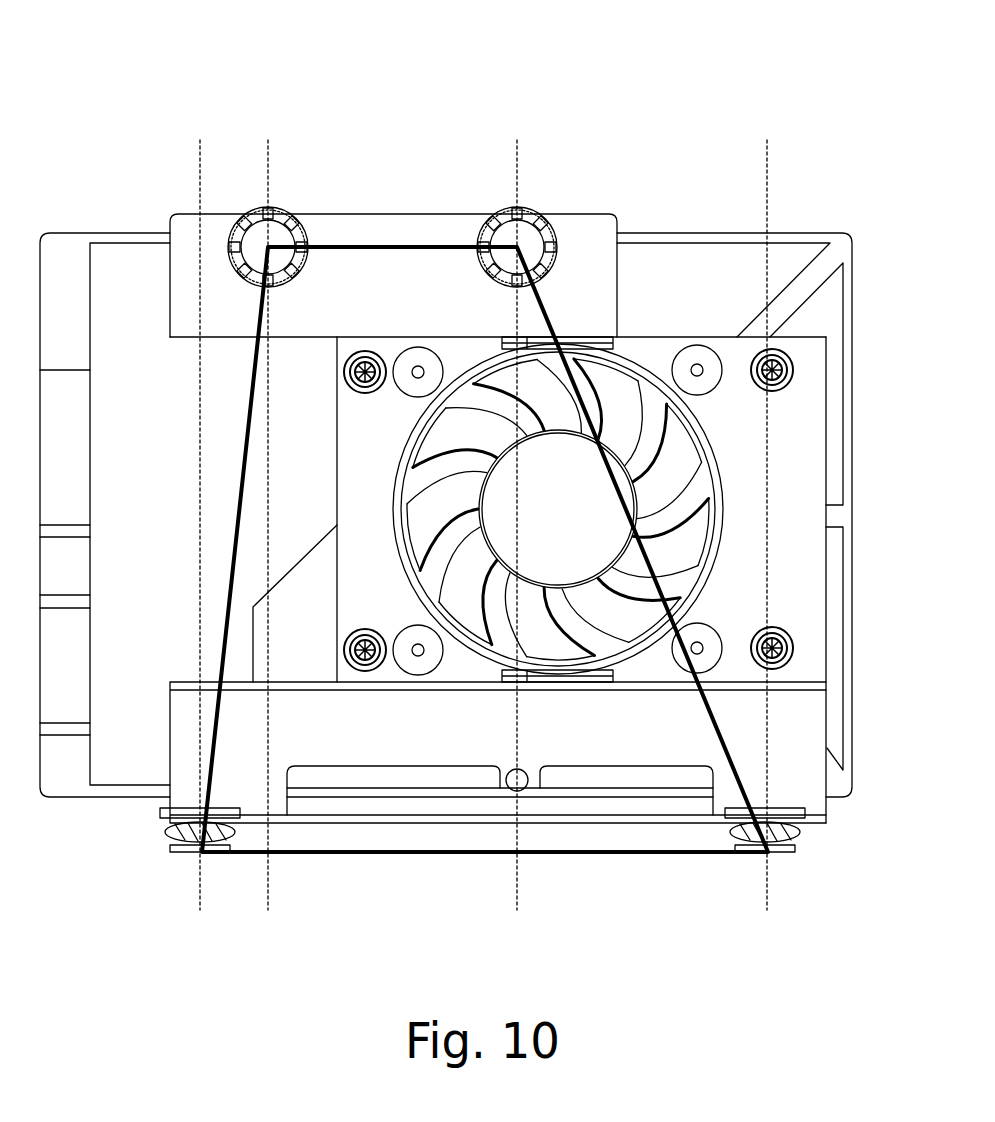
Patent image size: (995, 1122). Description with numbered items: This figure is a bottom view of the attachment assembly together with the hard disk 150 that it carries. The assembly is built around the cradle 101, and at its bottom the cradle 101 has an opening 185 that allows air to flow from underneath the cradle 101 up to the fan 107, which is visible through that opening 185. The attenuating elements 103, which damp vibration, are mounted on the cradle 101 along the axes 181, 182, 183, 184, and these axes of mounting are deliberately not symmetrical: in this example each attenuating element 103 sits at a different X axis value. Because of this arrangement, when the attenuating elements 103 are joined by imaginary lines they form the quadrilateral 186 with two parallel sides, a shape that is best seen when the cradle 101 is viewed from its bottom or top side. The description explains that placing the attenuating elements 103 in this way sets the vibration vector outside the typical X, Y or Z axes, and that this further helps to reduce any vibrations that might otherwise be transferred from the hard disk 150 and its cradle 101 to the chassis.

The cradle 101 is at (737, 663).
The attenuating elements 103 is at (505, 215).
The fan 107 is at (533, 632).
The hard disk 150 is at (285, 660).
The axis of mounting 181 is at (200, 178).
The axis of mounting 182 is at (268, 178).
The axis of mounting 183 is at (517, 178).
The axis of mounting 184 is at (764, 178).
The opening 185 is at (482, 380).
The quadrilateral shape 186 is at (247, 418).